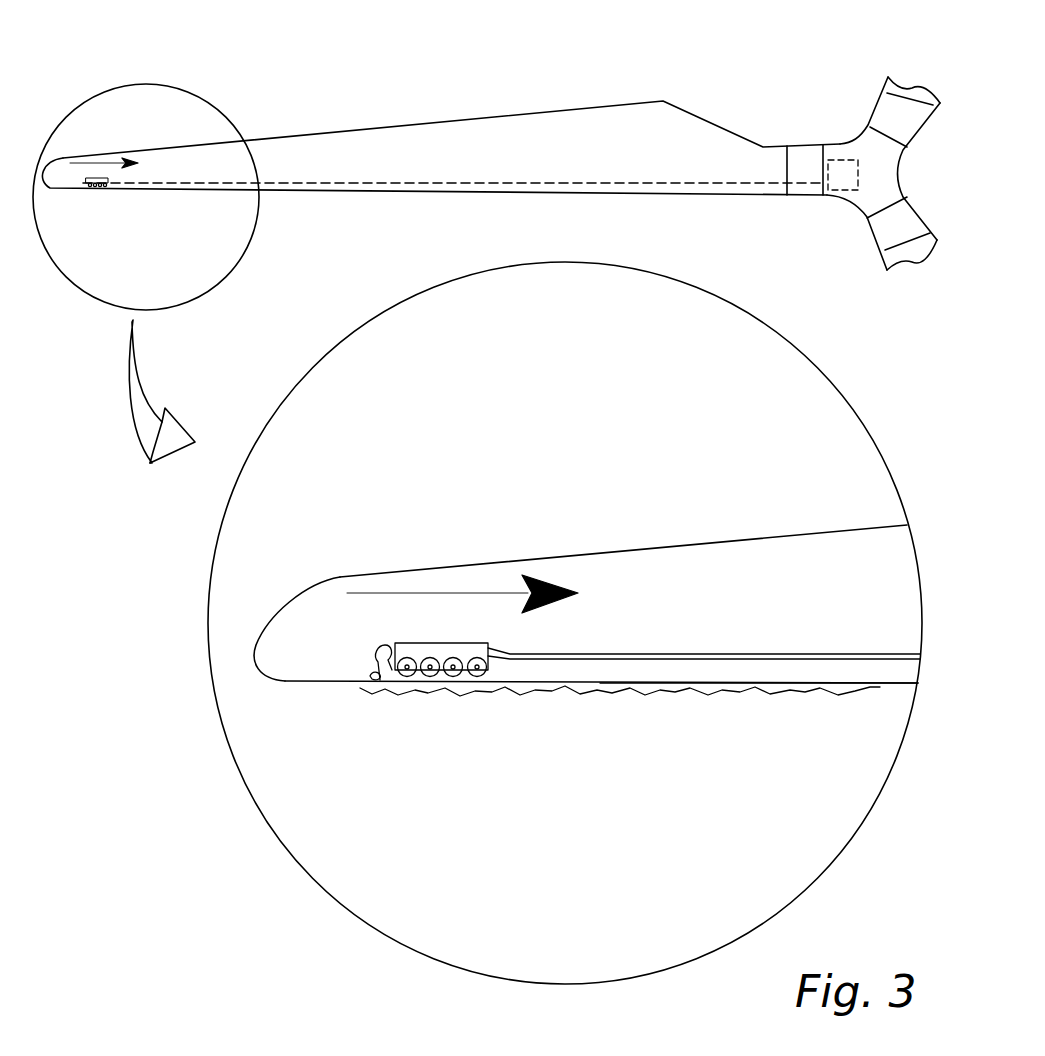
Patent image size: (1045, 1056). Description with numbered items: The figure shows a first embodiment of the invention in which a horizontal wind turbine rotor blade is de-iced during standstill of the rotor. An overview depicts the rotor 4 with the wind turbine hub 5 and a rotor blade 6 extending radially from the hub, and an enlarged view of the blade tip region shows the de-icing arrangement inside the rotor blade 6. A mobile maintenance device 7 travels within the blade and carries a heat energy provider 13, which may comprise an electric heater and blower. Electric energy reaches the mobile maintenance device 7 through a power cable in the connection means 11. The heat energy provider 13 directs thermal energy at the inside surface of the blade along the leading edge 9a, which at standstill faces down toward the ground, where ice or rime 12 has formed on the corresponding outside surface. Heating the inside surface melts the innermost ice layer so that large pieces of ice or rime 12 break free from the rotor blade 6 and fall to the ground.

The rotor 4 is at (330, 573).
The wind turbine hub 5 is at (818, 112).
The wind turbine rotor blade 6 is at (340, 117).
The mobile maintenance device 7 is at (422, 685).
The leading edge 9a is at (765, 688).
The connection means 11 is at (805, 655).
The ice or rime 12 is at (713, 692).
The heat energy provider 13 is at (375, 657).